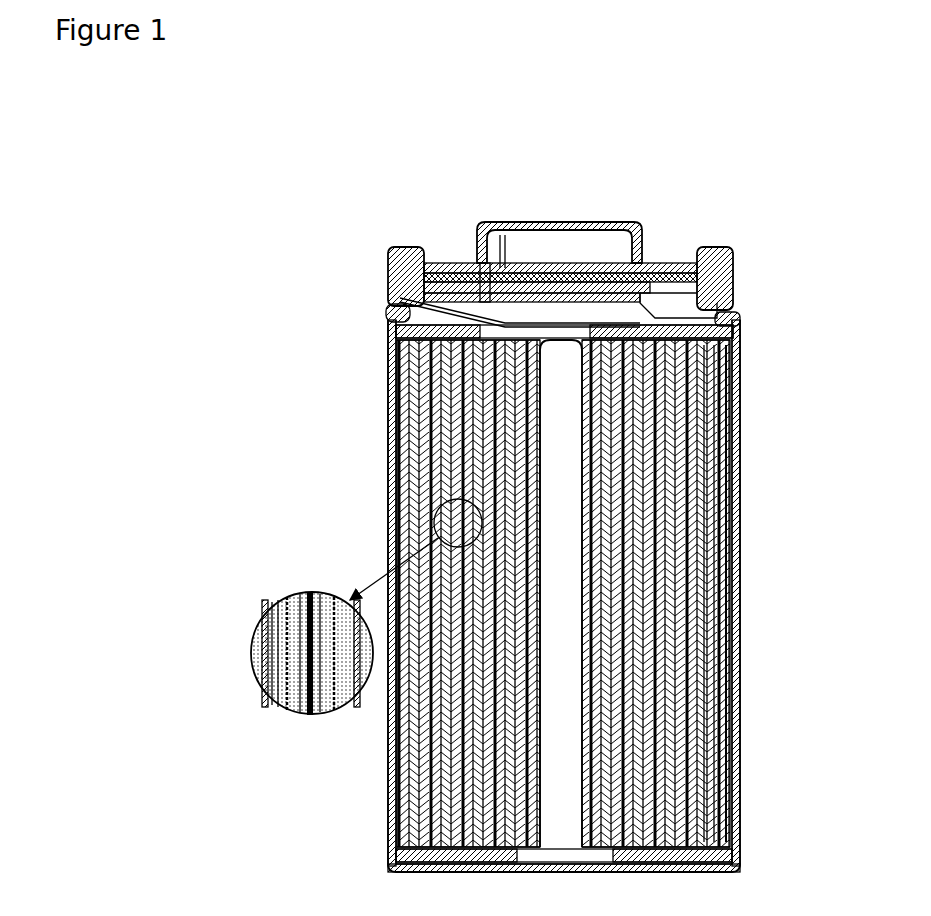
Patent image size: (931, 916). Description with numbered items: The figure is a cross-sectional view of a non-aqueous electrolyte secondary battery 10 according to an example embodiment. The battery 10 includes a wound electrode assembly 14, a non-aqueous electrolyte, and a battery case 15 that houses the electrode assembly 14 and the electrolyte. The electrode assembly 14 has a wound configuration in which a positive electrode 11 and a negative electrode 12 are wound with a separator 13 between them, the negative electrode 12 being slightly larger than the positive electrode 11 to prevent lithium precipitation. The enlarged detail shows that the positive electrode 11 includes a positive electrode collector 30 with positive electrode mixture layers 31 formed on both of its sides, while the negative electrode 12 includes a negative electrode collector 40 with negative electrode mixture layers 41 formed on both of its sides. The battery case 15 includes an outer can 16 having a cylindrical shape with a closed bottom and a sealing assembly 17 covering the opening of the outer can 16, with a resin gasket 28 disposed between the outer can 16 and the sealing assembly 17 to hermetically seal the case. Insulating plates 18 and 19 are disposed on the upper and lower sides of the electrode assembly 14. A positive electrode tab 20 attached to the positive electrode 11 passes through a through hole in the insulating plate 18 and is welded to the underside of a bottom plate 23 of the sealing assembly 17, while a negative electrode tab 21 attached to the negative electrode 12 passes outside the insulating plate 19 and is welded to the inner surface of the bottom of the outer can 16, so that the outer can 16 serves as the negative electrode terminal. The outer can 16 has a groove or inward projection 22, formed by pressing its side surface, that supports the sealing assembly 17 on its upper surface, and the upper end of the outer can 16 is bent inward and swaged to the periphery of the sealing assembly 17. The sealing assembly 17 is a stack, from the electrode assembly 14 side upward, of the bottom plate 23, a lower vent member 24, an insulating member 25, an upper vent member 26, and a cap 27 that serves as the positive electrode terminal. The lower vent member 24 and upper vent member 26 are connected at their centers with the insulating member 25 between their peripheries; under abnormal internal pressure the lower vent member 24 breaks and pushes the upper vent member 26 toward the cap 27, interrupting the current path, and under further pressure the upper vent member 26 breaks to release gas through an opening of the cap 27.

The non-aqueous electrolyte secondary battery 10 is at (735, 126).
The positive electrode 11 is at (727, 650).
The negative electrode 12 is at (727, 672).
The separator 13 is at (728, 690).
The electrode assembly 14 is at (786, 640).
The battery case 15 is at (655, 183).
The outer can 16 is at (710, 247).
The sealing assembly 17 is at (660, 262).
The insulating plate 18 is at (735, 331).
The insulating plate 19 is at (742, 850).
The positive electrode tab 20 is at (400, 300).
The negative electrode tab 21 is at (396, 856).
The groove or inward projection 22 is at (386, 316).
The bottom plate 23 is at (560, 288).
The lower vent member 24 is at (489, 275).
The insulating member 25 is at (445, 263).
The upper vent member 26 is at (505, 268).
The cap 27 is at (605, 222).
The gasket 28 is at (740, 262).
The positive electrode collector 30 is at (305, 592).
The positive electrode mixture layer 31 is at (322, 595).
The negative electrode collector 40 is at (264, 605).
The negative electrode mixture layer 41 is at (282, 600).